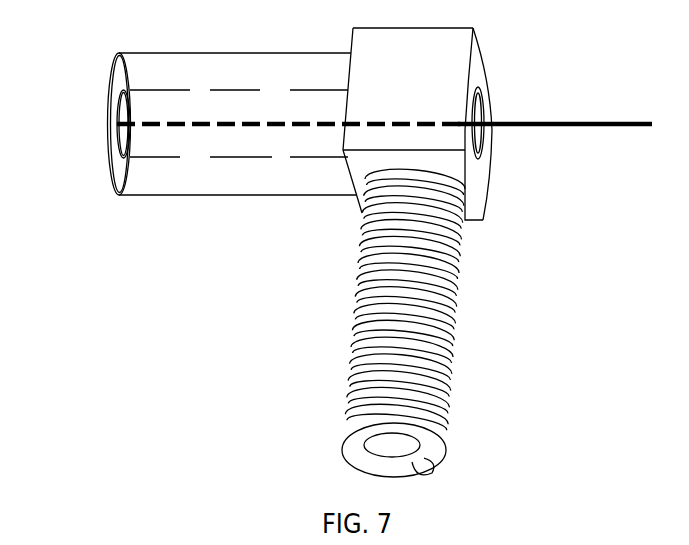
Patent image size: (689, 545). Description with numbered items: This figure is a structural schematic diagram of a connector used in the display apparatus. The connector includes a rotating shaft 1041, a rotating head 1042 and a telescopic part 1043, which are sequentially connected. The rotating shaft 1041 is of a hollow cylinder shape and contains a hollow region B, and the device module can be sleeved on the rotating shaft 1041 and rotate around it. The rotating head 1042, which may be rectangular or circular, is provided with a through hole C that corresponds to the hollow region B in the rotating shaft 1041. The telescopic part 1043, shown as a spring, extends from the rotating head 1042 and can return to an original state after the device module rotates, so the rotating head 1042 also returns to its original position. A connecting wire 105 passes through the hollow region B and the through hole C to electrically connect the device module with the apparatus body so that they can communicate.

The rotating shaft 1041 is at (233, 194).
The rotating head 1042 is at (485, 59).
The telescopic part 1043 is at (453, 288).
The connecting wire 105 is at (547, 127).
The hollow region B is at (116, 110).
The through hole C is at (480, 97).